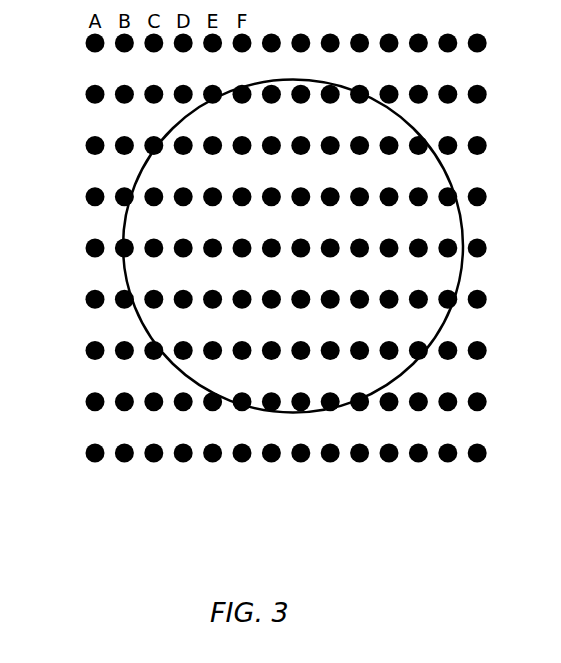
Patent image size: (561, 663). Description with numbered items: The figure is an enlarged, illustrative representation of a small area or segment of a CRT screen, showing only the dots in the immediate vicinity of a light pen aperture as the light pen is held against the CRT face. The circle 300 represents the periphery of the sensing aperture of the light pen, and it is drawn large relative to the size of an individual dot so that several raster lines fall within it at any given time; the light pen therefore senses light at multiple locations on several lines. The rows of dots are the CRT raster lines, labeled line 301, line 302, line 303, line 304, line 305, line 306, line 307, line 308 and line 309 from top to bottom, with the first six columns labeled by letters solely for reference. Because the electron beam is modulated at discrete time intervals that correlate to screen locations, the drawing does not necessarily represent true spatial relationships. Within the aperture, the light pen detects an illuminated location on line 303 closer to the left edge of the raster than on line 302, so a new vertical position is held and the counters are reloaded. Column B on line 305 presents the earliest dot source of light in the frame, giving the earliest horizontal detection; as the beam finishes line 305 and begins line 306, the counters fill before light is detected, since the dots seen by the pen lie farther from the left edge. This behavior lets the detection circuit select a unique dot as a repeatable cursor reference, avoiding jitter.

The circle 300 is at (448, 179).
The row 301 of dots 301 is at (263, 43).
The line 302 is at (263, 94).
The line 303 is at (263, 146).
The row 304 of dots 304 is at (263, 197).
The line 305 is at (263, 248).
The line 306 is at (263, 299).
The row 307 of dots 307 is at (263, 351).
The row 308 of dots 308 is at (263, 402).
The row 309 of dots 309 is at (263, 453).